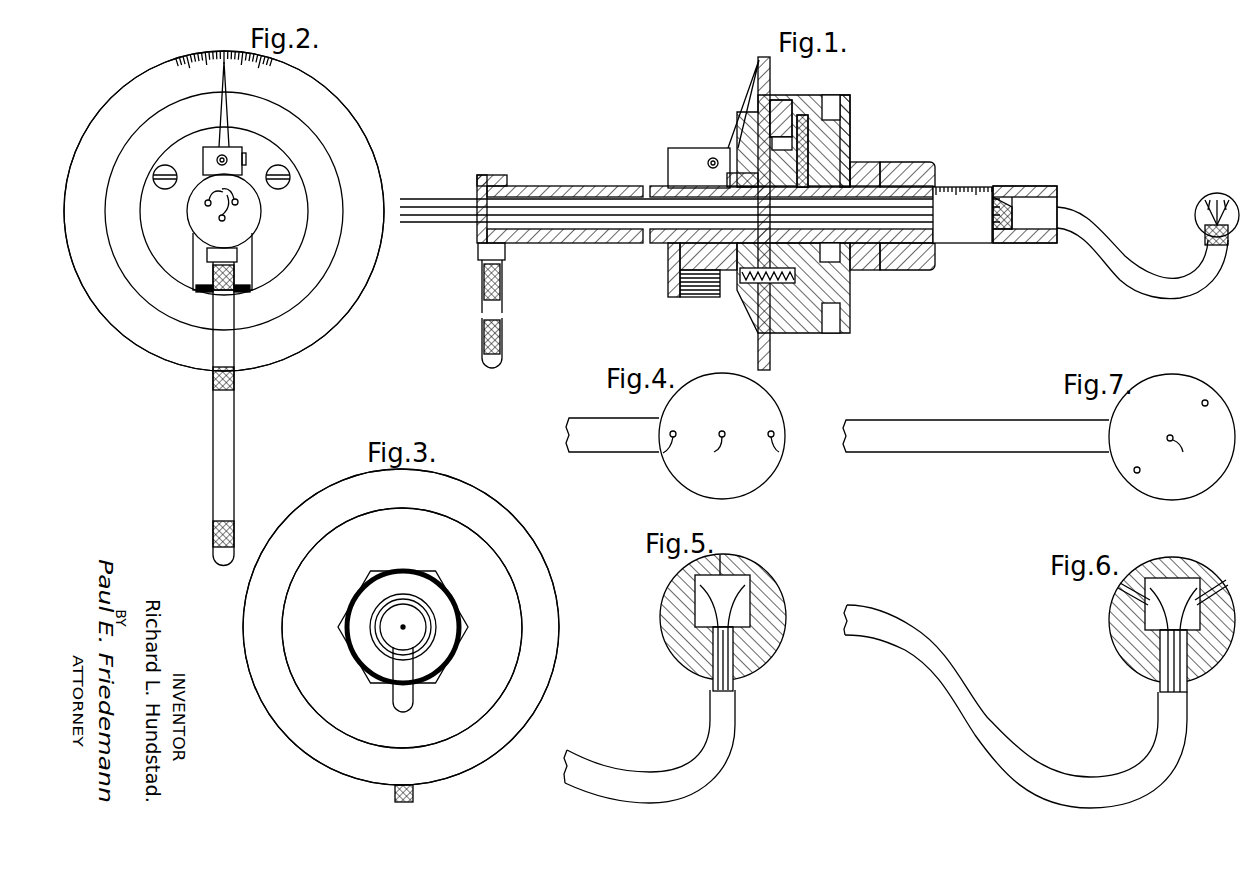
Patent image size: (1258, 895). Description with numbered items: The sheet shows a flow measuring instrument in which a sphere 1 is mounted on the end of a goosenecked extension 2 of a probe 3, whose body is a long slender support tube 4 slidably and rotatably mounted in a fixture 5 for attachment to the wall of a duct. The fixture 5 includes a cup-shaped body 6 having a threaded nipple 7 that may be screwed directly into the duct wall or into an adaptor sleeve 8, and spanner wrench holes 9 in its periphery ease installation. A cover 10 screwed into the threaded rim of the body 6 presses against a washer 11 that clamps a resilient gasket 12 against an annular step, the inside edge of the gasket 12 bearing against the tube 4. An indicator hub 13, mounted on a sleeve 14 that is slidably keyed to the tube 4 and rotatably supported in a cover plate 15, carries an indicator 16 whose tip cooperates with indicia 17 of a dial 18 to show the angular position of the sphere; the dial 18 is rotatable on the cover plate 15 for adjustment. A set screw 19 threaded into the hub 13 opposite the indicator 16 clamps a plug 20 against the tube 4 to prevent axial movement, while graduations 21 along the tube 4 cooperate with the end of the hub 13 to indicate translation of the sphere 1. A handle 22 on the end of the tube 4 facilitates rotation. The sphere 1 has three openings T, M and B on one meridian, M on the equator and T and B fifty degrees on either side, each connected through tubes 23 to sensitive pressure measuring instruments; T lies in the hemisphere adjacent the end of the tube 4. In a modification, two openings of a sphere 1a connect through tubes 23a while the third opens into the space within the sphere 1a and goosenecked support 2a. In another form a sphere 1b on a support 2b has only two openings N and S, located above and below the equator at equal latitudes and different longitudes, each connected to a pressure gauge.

In FIG. 1, the sphere 1 is at (1199, 212).
In FIG. 3, the sphere 1 is at (380, 622).
In FIG. 4, the sphere 1 is at (775, 412).
In FIG. 7, the sphere 1a is at (1125, 478).
In FIG. 5, the sphere 1a is at (660, 617).
In FIG. 6, the sphere 1b is at (1113, 614).
In FIG. 1, the goosenecked extension 2 is at (1122, 254).
In FIG. 3, the goosenecked extension 2 is at (397, 694).
In FIG. 4, the goosenecked extension 2 is at (622, 452).
In FIG. 5, the goosenecked support 2a is at (672, 766).
In FIG. 7, the support 2b is at (1010, 453).
In FIG. 6, the support 2b is at (958, 701).
In FIG. 2, the probe 3 is at (85, 121).
In FIG. 1, the probe 3 is at (1030, 181).
In FIG. 3, the probe 3 is at (517, 506).
In FIG. 1, the support tube 4 is at (558, 242).
In FIG. 3, the support tube 4 is at (382, 634).
In FIG. 2, the fixture 5 is at (118, 262).
In FIG. 1, the fixture 5 is at (876, 133).
In FIG. 3, the fixture 5 is at (290, 612).
In FIG. 1, the cup-shaped body 6 is at (848, 118).
In FIG. 3, the cup-shaped body 6 is at (290, 660).
In FIG. 1, the threaded nipple 7 is at (858, 168).
In FIG. 1, the adaptor sleeve 8 is at (898, 163).
In FIG. 3, the adaptor sleeve 8 is at (368, 575).
In FIG. 1, the spanner wrench holes 9 is at (840, 100).
In FIG. 1, the cover 10 is at (776, 100).
In FIG. 1, the washer 11 is at (790, 137).
In FIG. 1, the resilient gasket 12 is at (805, 115).
In FIG. 2, the indicator hub 13 is at (203, 155).
In FIG. 1, the indicator hub 13 is at (672, 148).
In FIG. 1, the sleeve 14 is at (670, 258).
In FIG. 2, the cover plate 15 is at (140, 290).
In FIG. 1, the cover plate 15 is at (742, 310).
In FIG. 2, the indicator 16 is at (226, 113).
In FIG. 1, the indicator 16 is at (730, 132).
In FIG. 2, the indicia 17 is at (190, 53).
In FIG. 2, the dial 18 is at (335, 99).
In FIG. 1, the dial 18 is at (757, 62).
In FIG. 3, the dial 18 is at (242, 652).
In FIG. 2, the set screw 19 is at (205, 295).
In FIG. 1, the set screw 19 is at (683, 297).
In FIG. 1, the plug 20 is at (680, 268).
In FIG. 1, the graduations 21 is at (956, 187).
In FIG. 2, the handle 22 is at (213, 412).
In FIG. 1, the handle 22 is at (483, 278).
In FIG. 2, the tubes 23 is at (224, 211).
In FIG. 1, the tubes 23 is at (438, 210).
In FIG. 5, the tubes 23a is at (740, 598).
In FIG. 1, the opening T is at (1195, 195).
In FIG. 4, the opening T is at (664, 453).
In FIG. 7, the opening T is at (1134, 469).
In FIG. 1, the opening M is at (1207, 203).
In FIG. 4, the opening M is at (715, 453).
In FIG. 7, the opening M is at (1177, 450).
In FIG. 1, the opening B is at (1226, 195).
In FIG. 4, the opening B is at (781, 454).
In FIG. 7, the opening B is at (1208, 401).
In FIG. 6, the opening N is at (1122, 584).
In FIG. 6, the opening S is at (1226, 584).